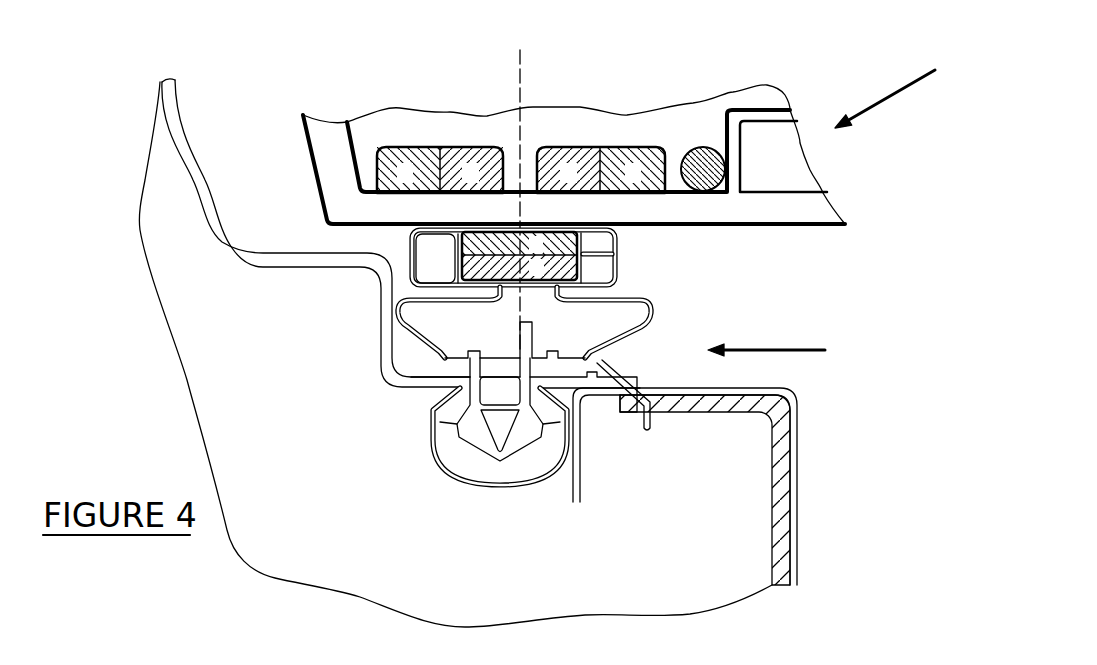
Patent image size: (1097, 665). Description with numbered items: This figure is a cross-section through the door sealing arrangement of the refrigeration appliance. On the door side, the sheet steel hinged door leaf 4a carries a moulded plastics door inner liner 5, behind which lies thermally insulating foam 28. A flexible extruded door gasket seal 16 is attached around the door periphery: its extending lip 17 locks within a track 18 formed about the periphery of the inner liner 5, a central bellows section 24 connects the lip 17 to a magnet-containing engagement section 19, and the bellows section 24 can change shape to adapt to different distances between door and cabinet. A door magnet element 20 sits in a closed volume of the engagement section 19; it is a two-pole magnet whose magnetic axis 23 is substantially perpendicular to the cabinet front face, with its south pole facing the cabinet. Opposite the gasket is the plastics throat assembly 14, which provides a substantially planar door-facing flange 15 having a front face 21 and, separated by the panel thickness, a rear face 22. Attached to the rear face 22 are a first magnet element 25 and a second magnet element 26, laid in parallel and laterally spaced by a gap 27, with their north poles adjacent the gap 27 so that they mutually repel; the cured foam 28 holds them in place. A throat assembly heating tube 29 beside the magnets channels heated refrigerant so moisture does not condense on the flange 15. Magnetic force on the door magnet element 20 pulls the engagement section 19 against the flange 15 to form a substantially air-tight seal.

The hinged door leaf 4a is at (793, 525).
The door inner liner 5 is at (183, 110).
The throat assembly 14 is at (901, 84).
The door-facing flange 15 is at (817, 217).
The door gasket seal 16 is at (598, 362).
The extending lip 17 is at (520, 450).
The track 18 is at (463, 470).
The engagement section 19 is at (412, 263).
The door magnet element 20 is at (578, 268).
The front face 21 is at (805, 228).
The rear face 22 is at (673, 187).
The magnetic axis 23 is at (525, 95).
The bellows section 24 is at (413, 342).
The first magnet element 25 is at (397, 145).
The second magnet element 26 is at (595, 145).
The gap 27 is at (512, 170).
The foam 28 is at (722, 110).
The throat assembly heating tube 29 is at (717, 192).